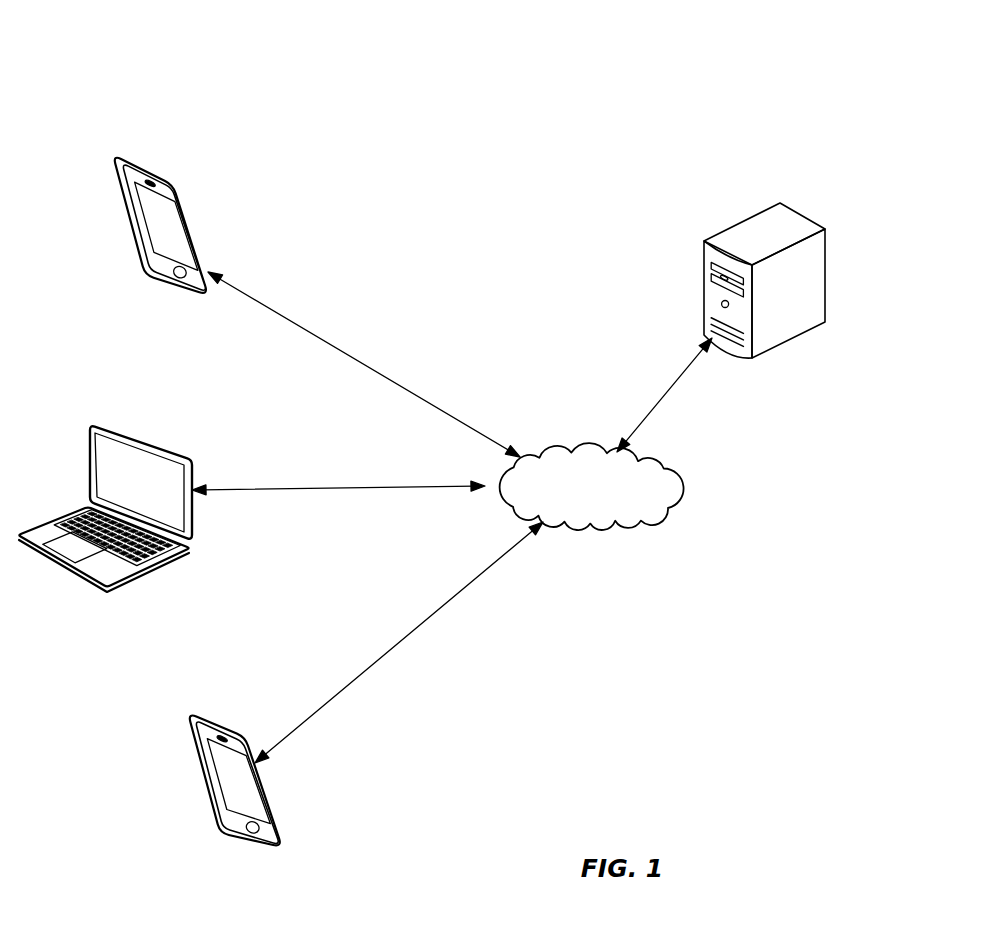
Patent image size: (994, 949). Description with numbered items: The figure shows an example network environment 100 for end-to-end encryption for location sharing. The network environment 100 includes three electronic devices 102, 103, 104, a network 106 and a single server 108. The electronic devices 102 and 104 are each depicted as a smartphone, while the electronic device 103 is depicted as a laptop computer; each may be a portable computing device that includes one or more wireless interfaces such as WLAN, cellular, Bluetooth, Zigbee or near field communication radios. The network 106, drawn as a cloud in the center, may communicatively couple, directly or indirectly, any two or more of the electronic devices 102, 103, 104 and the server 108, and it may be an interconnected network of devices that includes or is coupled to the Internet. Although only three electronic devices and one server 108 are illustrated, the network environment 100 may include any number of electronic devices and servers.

The network environment 100 is at (180, 72).
The electronic device 102 is at (230, 843).
The electronic device 103 is at (110, 587).
The electronic device 104 is at (167, 293).
The network 106 is at (617, 523).
The server 108 is at (705, 232).